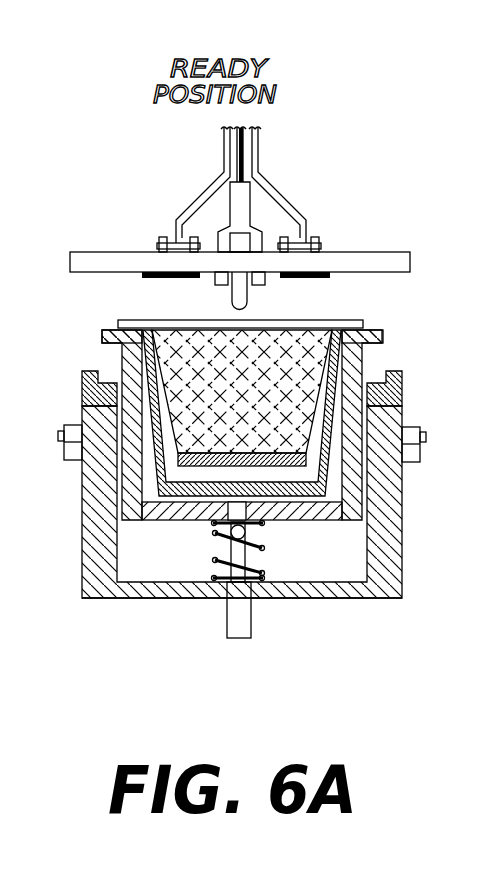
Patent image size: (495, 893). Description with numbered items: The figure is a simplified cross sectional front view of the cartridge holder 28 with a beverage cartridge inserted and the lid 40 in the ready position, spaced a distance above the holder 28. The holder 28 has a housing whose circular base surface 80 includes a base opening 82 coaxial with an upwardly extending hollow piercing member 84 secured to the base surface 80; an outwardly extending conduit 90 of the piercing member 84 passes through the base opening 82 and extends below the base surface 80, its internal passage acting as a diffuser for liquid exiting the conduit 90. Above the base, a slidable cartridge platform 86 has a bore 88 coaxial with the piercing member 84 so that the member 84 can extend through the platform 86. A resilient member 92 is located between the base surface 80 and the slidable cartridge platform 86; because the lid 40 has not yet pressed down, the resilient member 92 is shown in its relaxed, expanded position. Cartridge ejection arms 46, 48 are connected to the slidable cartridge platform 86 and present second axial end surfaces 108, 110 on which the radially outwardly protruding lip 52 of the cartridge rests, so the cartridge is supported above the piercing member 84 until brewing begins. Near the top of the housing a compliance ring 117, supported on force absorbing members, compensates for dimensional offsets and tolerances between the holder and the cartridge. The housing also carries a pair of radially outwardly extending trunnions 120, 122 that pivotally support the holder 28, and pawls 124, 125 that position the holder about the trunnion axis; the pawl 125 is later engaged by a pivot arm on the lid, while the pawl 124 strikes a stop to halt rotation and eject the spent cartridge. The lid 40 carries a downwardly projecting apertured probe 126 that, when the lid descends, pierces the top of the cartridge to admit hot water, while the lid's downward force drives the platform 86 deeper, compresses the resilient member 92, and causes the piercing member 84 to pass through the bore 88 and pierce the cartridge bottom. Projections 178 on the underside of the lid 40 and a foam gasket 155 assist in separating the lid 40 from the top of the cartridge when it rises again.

The cartridge holder 28 is at (404, 560).
The lid 40 is at (370, 262).
The cartridge ejection arm 46 is at (102, 338).
The cartridge ejection arm 48 is at (383, 338).
The radially outwardly protruding lip 52 is at (364, 323).
The base surface 80 is at (148, 600).
The base opening 82 is at (226, 600).
The hollow piercing member 84 is at (214, 532).
The slidable cartridge platform 86 is at (316, 522).
The bore 88 is at (240, 512).
The outwardly extending conduit 90 is at (251, 616).
The resilient member 92 is at (218, 563).
The second axial end surface 108 is at (112, 330).
The second axial end surface 110 is at (383, 327).
The compliance ring 117 is at (457, 418).
The trunnion 120 is at (58, 436).
The trunnion 122 is at (426, 436).
The pawl 124 is at (66, 425).
The pawl 125 is at (412, 428).
The apertured probe 126 is at (247, 290).
The foam gasket 155 is at (214, 279).
The projections 178 is at (138, 274).